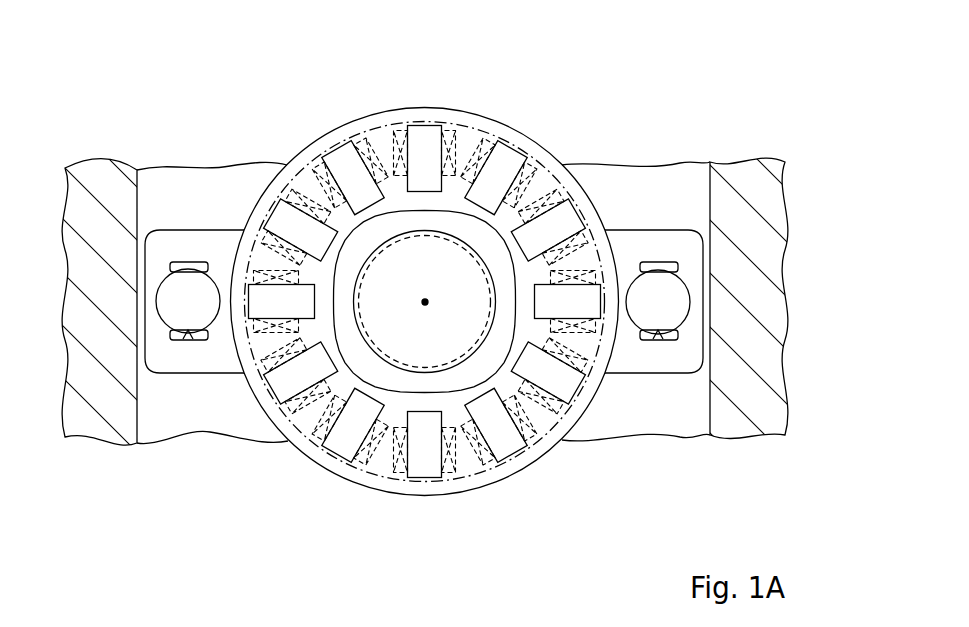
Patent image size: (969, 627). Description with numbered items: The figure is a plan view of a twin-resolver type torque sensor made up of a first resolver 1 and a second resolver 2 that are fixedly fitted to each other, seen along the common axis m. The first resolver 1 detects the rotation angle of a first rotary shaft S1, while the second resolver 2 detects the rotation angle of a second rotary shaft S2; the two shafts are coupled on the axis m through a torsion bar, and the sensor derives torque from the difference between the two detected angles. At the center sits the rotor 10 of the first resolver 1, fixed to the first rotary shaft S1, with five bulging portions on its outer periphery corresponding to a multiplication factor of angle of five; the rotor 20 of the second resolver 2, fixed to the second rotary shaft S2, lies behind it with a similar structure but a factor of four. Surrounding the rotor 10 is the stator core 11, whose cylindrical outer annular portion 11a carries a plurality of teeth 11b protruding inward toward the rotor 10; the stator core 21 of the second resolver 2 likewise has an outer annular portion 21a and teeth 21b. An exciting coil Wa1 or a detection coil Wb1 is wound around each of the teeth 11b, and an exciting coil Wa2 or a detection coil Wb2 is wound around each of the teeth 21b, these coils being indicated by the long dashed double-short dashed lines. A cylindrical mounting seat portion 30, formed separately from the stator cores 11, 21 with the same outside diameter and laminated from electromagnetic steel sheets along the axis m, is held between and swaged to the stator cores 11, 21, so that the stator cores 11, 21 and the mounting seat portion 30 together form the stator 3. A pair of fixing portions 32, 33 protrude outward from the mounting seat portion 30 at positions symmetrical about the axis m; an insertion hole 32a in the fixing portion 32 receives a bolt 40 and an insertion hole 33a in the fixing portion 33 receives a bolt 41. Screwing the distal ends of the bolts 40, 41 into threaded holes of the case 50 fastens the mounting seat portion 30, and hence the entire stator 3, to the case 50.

The first resolver 1 is at (426, 326).
The second resolver 2 is at (563, 140).
The stator 3 is at (315, 500).
The rotor 10 is at (425, 228).
The rotor 20 is at (468, 242).
The stator core 11 is at (411, 332).
The stator core 21 is at (260, 413).
The outer annular portion 11a is at (441, 321).
The outer annular portion 21a is at (502, 484).
The teeth 11b is at (425, 341).
The teeth 21b is at (407, 478).
The mounting seat portion 30 is at (289, 450).
The fixing portion 32 is at (652, 230).
The insertion hole 32a is at (660, 342).
The fixing portion 33 is at (194, 230).
The insertion hole 33a is at (190, 342).
The bolt 40 is at (668, 258).
The bolt 41 is at (203, 262).
The case 50 is at (788, 266).
The first rotary shaft S1 is at (411, 335).
The second rotary shaft S2 is at (523, 180).
The exciting coil Wa1 is at (447, 360).
The detection coil Wb1 is at (447, 360).
The exciting coil Wa2 is at (447, 360).
The detection coil Wb2 is at (397, 472).
The axis m is at (421, 302).